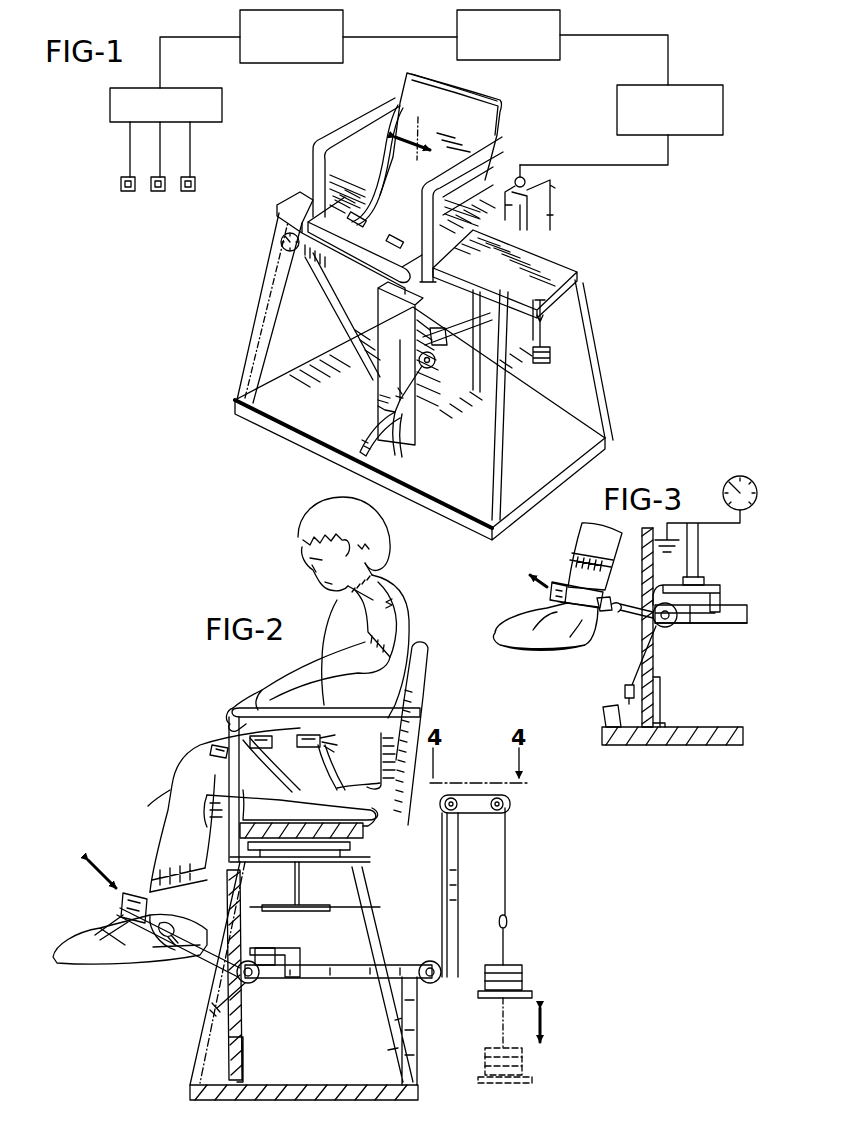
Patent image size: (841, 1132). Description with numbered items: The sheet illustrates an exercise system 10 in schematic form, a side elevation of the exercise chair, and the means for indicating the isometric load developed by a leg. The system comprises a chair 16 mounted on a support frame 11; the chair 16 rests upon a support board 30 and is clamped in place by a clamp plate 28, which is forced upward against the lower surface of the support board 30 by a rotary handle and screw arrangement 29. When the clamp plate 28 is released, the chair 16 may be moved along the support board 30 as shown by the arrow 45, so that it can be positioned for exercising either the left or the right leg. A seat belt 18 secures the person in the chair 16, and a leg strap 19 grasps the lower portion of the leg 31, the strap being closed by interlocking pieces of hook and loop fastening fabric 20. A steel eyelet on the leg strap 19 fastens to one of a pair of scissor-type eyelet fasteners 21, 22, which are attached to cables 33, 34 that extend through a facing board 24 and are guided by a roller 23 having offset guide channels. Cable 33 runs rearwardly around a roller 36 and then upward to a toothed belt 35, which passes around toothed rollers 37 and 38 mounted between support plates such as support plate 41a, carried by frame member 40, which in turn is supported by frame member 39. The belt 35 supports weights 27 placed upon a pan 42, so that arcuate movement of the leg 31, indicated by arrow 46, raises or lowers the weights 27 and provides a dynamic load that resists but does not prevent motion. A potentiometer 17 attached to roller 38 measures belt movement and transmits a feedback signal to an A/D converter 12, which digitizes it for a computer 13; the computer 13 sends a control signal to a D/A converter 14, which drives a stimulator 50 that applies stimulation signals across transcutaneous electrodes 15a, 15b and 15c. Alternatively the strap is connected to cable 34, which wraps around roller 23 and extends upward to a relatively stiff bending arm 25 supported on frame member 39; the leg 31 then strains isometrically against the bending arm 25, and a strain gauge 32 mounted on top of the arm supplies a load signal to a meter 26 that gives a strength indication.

In FIG. 1, the exercise system 10 is at (404, 366).
In FIG. 2, the exercise system 10 is at (185, 1056).
In FIG. 1, the support frame 11 is at (578, 300).
In FIG. 1, the A/D converter 12 is at (652, 85).
In FIG. 1, the computer 13 is at (457, 25).
In FIG. 1, the D/A converter 14 is at (240, 23).
In FIG. 1, the electrode 15a is at (128, 191).
In FIG. 2, the electrode 15a is at (218, 746).
In FIG. 1, the electrode 15b is at (188, 191).
In FIG. 2, the electrode 15b is at (300, 733).
In FIG. 1, the electrode 15c is at (158, 191).
In FIG. 2, the electrode 15c is at (258, 733).
In FIG. 1, the chair 16 is at (503, 118).
In FIG. 2, the chair 16 is at (428, 677).
In FIG. 1, the potentiometer 17 is at (520, 168).
In FIG. 1, the seat belt 18 is at (397, 238).
In FIG. 2, the seat belt 18 is at (412, 708).
In FIG. 2, the leg strap 19 is at (120, 906).
In FIG. 3, the leg strap 19 is at (567, 580).
In FIG. 1, the hook and loop fastening fabric 20 is at (362, 442).
In FIG. 2, the hook and loop fastening fabric 20 is at (110, 930).
In FIG. 1, the scissor-type eyelet fastener 21 is at (378, 407).
In FIG. 2, the scissor-type eyelet fastener 21 is at (164, 945).
In FIG. 3, the scissor-type eyelet fastener 21 is at (622, 690).
In FIG. 1, the scissor-type eyelet fastener 22 is at (400, 395).
In FIG. 2, the scissor-type eyelet fastener 22 is at (212, 1010).
In FIG. 3, the scissor-type eyelet fastener 22 is at (610, 612).
In FIG. 1, the roller 23 is at (430, 369).
In FIG. 2, the roller 23 is at (252, 958).
In FIG. 3, the roller 23 is at (667, 628).
In FIG. 1, the facing board 24 is at (383, 313).
In FIG. 3, the facing board 24 is at (655, 690).
In FIG. 1, the bending arm 25 is at (435, 333).
In FIG. 2, the bending arm 25 is at (300, 958).
In FIG. 3, the bending arm 25 is at (660, 578).
In FIG. 1, the meter 26 is at (281, 246).
In FIG. 3, the meter 26 is at (742, 476).
In FIG. 1, the weights 27 is at (557, 338).
In FIG. 2, the weights 27 is at (522, 962).
In FIG. 2, the clamp plate 28 is at (356, 863).
In FIG. 2, the rotary handle and screw arrangement 29 is at (301, 887).
In FIG. 1, the support board 30 is at (541, 270).
In FIG. 2, the support board 30 is at (356, 838).
In FIG. 2, the leg 31 is at (168, 802).
In FIG. 3, the strain gauge 32 is at (705, 578).
In FIG. 2, the cable 33 is at (205, 962).
In FIG. 3, the cable 33 is at (735, 625).
In FIG. 2, the cable 34 is at (238, 995).
In FIG. 3, the cable 34 is at (688, 624).
In FIG. 2, the toothed belt 35 is at (507, 856).
In FIG. 2, the roller 36 is at (430, 961).
In FIG. 2, the toothed roller 37 is at (481, 883).
In FIG. 2, the toothed roller 38 is at (512, 802).
In FIG. 2, the frame member 39 is at (353, 975).
In FIG. 3, the frame member 39 is at (745, 604).
In FIG. 2, the frame member 40 is at (459, 884).
In FIG. 2, the support plate 41a is at (480, 812).
In FIG. 2, the pan 42 is at (530, 990).
In FIG. 1, the arrow 45 is at (413, 131).
In FIG. 2, the arrow 46 is at (105, 870).
In FIG. 1, the stimulator 50 is at (110, 105).